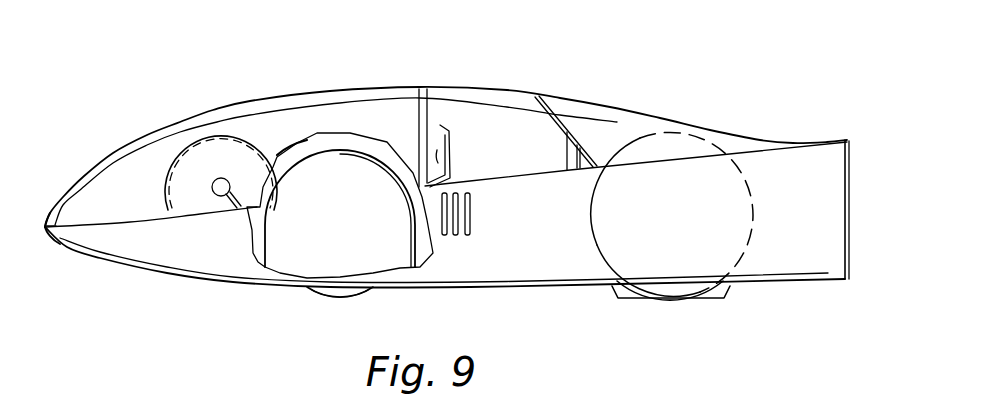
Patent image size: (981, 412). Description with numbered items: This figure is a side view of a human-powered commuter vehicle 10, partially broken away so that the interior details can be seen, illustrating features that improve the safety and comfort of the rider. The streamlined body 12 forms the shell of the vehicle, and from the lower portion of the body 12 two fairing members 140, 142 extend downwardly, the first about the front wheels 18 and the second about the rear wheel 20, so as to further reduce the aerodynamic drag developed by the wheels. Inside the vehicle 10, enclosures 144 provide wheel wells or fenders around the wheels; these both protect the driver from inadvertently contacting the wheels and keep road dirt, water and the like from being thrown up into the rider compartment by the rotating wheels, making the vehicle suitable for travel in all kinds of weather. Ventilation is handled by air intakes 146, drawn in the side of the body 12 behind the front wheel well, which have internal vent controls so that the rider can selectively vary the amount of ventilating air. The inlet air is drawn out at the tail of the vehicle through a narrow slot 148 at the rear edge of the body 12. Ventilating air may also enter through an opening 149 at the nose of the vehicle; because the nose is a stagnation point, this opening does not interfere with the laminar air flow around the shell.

The vehicle 10 is at (113, 53).
The body 12 is at (510, 89).
The enclosures 144 is at (310, 167).
The fairing member 140 is at (377, 287).
The front wheels 18 is at (327, 296).
The air intakes 146 is at (473, 233).
The rear wheel 20 is at (680, 303).
The fairing member 142 is at (727, 297).
The narrow slot 148 is at (847, 150).
The opening 149 is at (44, 229).